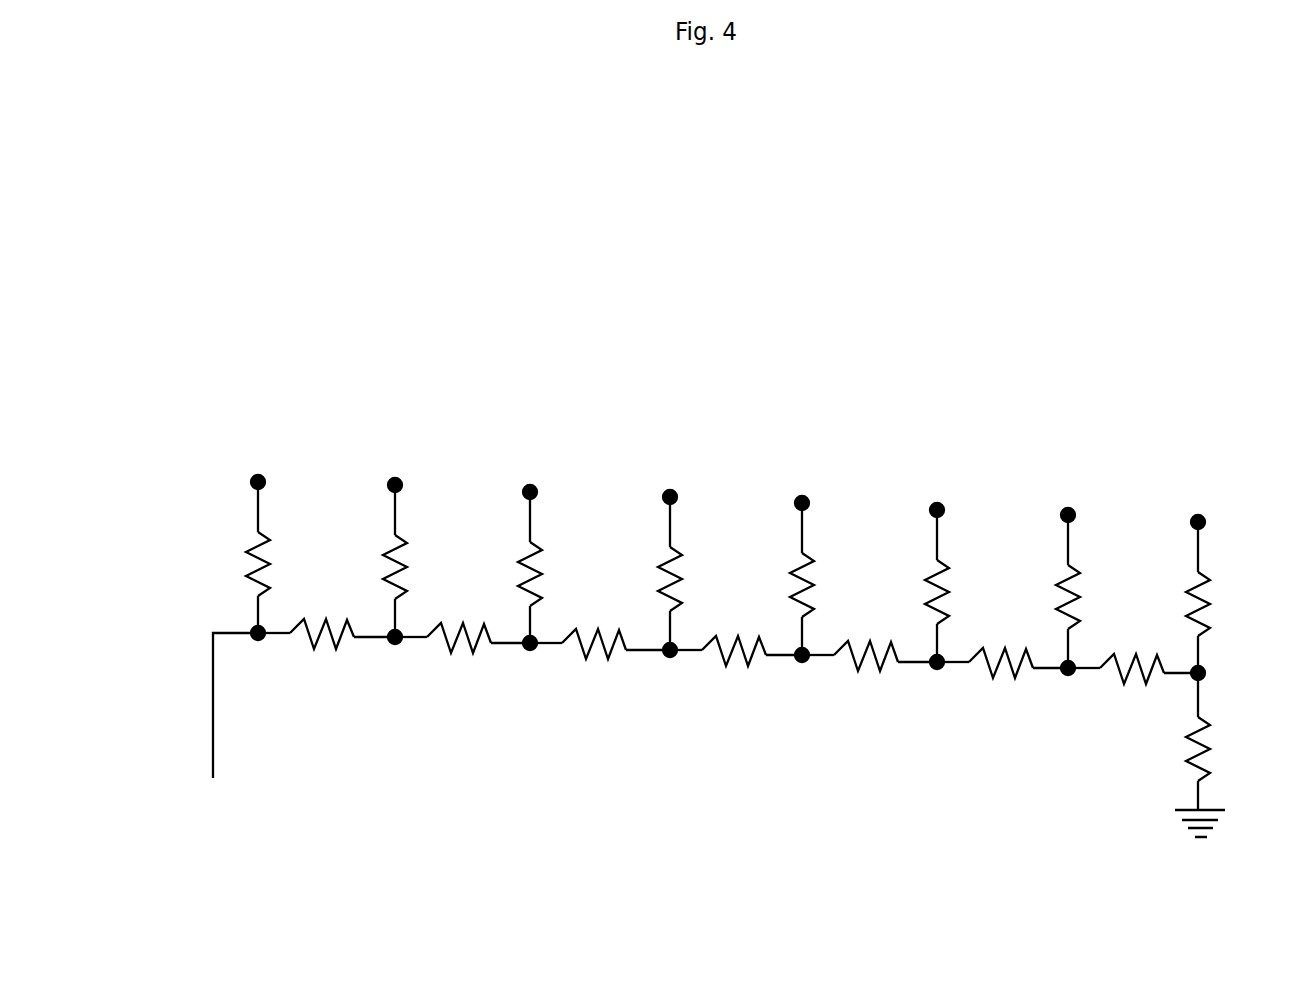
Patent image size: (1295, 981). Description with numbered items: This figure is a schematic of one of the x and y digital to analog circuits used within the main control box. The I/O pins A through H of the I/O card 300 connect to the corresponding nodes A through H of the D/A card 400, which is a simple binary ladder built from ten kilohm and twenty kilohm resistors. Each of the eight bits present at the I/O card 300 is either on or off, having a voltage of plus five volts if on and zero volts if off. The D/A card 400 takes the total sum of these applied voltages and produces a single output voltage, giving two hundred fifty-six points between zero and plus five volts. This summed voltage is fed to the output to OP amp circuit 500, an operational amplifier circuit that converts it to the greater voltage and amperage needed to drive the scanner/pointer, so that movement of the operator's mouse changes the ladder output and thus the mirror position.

The I/O card 300 is at (728, 398).
The D/A card 400 is at (398, 312).
The output to OP amp circuit 500 is at (219, 751).